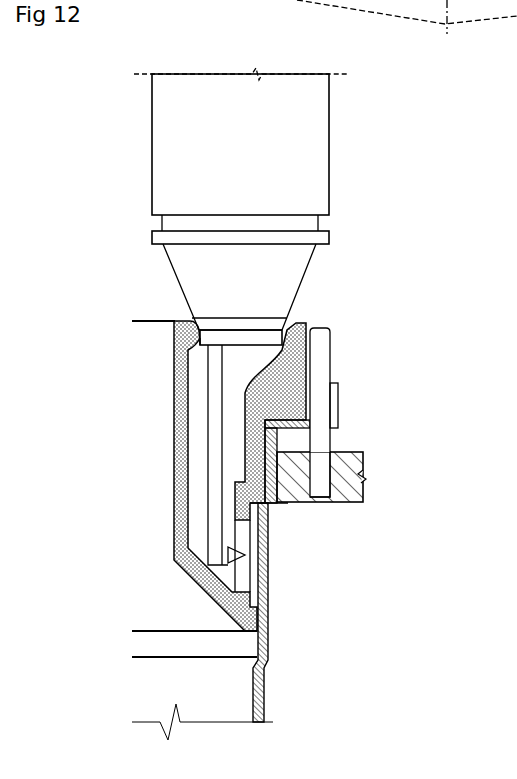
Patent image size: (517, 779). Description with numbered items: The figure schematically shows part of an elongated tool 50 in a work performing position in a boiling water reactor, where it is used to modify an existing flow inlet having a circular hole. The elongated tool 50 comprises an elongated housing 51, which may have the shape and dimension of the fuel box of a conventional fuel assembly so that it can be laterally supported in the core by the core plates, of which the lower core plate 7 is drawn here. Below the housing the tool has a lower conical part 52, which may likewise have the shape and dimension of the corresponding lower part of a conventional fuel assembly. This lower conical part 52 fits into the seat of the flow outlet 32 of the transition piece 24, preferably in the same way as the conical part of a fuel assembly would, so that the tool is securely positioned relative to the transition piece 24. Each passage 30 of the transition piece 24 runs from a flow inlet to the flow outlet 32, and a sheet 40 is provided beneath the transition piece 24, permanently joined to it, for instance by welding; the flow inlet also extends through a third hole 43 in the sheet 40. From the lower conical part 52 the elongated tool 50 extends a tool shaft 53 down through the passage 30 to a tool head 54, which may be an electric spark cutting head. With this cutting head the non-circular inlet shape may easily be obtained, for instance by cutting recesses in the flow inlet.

The elongated tool 50 is at (148, 158).
The elongated housing 51 is at (163, 197).
The lower conical part 52 is at (198, 272).
The flow outlet 32 is at (200, 315).
The transition piece 24 is at (177, 362).
The tool shaft 53 is at (215, 446).
The passage 30 is at (202, 478).
The tool head 54 is at (235, 555).
The sheet 40 is at (215, 588).
The third hole 43 is at (258, 574).
The lower core plate 7 is at (363, 462).